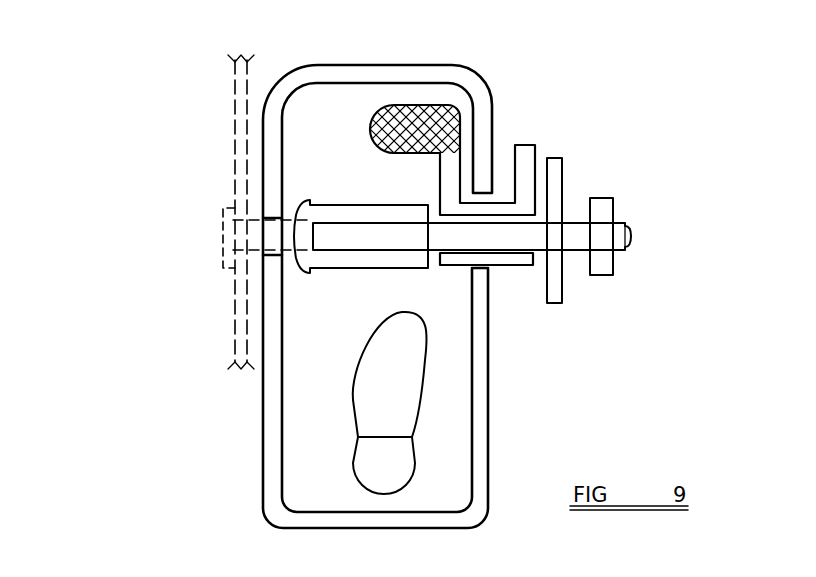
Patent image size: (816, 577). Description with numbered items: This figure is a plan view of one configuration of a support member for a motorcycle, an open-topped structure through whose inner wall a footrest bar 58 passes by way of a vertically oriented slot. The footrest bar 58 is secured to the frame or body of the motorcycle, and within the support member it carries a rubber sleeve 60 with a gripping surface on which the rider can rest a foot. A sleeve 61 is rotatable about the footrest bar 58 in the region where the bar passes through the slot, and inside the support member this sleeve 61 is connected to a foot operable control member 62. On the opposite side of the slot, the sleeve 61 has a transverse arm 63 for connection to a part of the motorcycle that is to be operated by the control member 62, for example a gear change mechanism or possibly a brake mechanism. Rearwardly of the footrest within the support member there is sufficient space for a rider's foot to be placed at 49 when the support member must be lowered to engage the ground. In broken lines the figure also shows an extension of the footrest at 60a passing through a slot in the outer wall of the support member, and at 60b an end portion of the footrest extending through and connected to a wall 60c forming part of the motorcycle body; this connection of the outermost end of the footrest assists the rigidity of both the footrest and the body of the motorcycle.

The space for rider's foot 49 is at (368, 398).
The footrest bar 58 is at (568, 235).
The rubber sleeve 60 is at (363, 258).
The extension of footrest 60a is at (277, 202).
The end portion of footrest 60b is at (223, 255).
The wall 60c is at (237, 128).
The sleeve 61 is at (517, 262).
The foot operable control member 62 is at (442, 122).
The transverse arm 63 is at (537, 155).